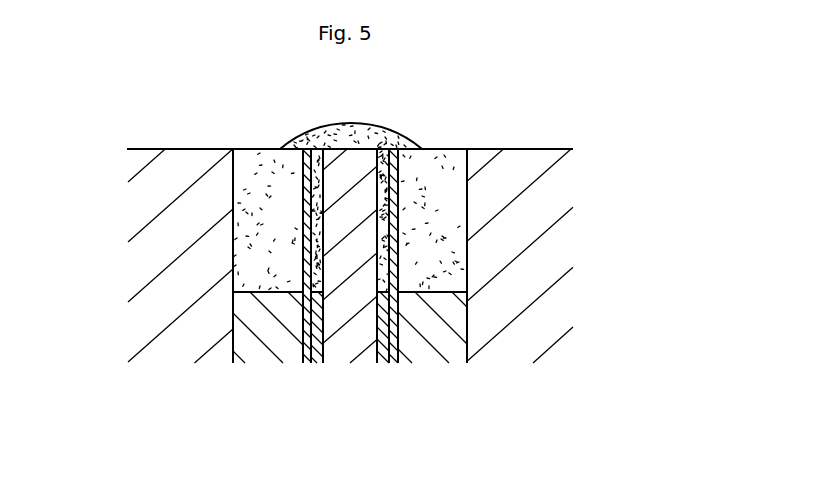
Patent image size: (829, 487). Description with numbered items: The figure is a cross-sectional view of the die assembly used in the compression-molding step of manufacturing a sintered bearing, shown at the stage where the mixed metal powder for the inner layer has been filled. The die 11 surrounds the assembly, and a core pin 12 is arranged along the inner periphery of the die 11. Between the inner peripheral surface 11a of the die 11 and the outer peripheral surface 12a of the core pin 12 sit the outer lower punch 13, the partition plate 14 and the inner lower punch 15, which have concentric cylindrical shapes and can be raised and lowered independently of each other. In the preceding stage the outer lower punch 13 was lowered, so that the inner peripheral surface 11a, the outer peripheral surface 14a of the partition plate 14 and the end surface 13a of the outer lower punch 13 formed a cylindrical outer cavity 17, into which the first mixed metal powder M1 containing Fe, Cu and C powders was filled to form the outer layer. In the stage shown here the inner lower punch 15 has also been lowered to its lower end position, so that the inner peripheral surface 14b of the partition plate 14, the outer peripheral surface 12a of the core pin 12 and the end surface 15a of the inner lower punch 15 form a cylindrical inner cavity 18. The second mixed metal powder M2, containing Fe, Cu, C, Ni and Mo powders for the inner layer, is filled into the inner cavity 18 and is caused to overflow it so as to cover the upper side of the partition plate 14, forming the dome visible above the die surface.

The die 11 is at (524, 163).
The inner peripheral surface of the die 11a is at (233, 187).
The core pin 12 is at (357, 340).
The outer peripheral surface of the core pin 12a is at (310, 208).
The outer lower punch 13 is at (263, 326).
The end surface of the outer lower punch 13a is at (257, 292).
The partition plate 14 is at (302, 336).
The outer peripheral surface of the partition plate 14a is at (303, 170).
The inner peripheral surface of the partition plate 14b is at (333, 166).
The inner lower punch 15 is at (325, 338).
The end surface of the inner lower punch 15a is at (316, 262).
The outer cavity 17 is at (427, 191).
The inner cavity 18 is at (383, 159).
The first mixed metal powder M1 is at (450, 217).
The second mixed metal powder M2 is at (377, 255).